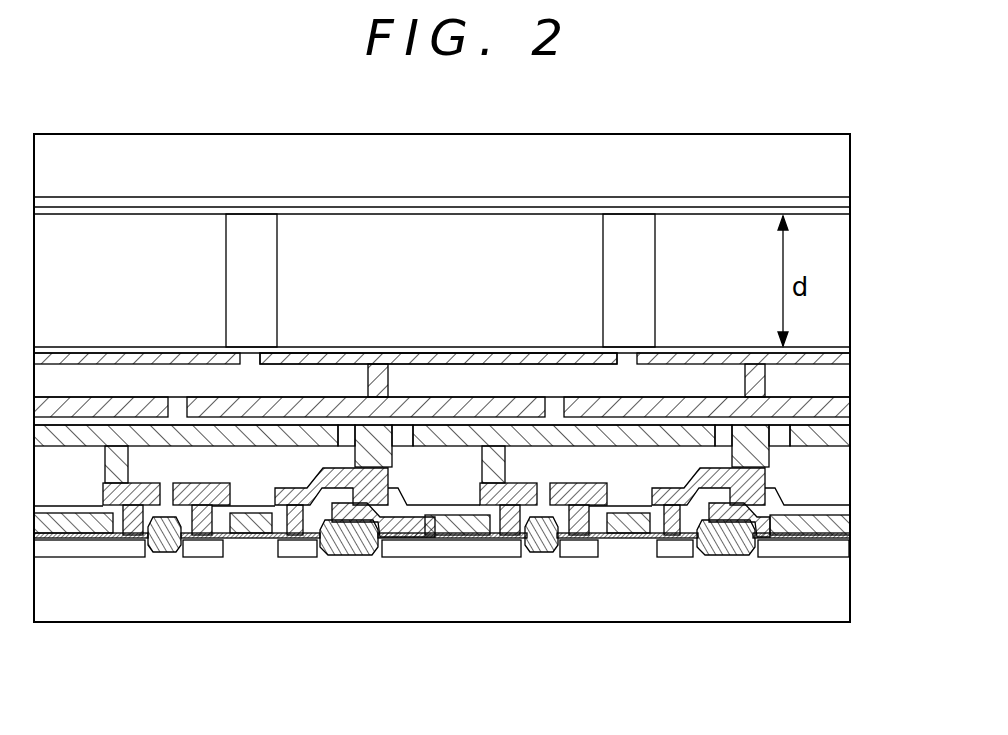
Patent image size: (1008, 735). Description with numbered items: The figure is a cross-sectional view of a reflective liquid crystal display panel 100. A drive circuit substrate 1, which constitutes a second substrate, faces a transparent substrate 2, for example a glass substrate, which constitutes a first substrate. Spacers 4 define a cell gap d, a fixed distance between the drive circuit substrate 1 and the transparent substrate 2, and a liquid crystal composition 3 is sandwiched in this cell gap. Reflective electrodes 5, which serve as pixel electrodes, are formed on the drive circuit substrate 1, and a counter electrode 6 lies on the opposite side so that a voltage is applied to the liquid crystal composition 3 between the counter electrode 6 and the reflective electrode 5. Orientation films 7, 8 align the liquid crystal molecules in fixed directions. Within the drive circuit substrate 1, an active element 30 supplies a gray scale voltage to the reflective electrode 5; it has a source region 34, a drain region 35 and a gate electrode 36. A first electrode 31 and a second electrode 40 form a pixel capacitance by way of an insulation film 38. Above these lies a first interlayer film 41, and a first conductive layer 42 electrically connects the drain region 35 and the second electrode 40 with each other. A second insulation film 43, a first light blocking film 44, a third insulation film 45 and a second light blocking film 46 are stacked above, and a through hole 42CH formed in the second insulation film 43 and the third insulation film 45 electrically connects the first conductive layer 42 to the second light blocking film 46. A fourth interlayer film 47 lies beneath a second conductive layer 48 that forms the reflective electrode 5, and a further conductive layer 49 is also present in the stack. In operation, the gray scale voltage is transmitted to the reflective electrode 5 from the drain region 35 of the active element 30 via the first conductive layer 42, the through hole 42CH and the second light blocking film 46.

The drive circuit substrate 1 is at (763, 612).
The transparent substrate 2 is at (842, 170).
The liquid crystal composition 3 is at (837, 262).
The spacers 4 is at (645, 256).
The reflective electrode 5 is at (536, 362).
The second conductive layer 48 is at (438, 358).
The counter electrode 6 is at (83, 201).
The orientation film 7 is at (124, 349).
The orientation film 8 is at (184, 216).
The active element 30 is at (242, 548).
The first electrode 31 is at (398, 556).
The source region 34 is at (580, 556).
The drain region 35 is at (677, 555).
The gate electrode 36 is at (622, 540).
The insulation film 38 is at (250, 538).
The second electrode 40 is at (430, 540).
The first interlayer film 41 is at (455, 540).
The first conductive layer 42 is at (317, 536).
The through hole 42CH is at (386, 426).
The second insulation film 43 is at (196, 486).
The first light blocking film 44 is at (160, 442).
The third insulation film 45 is at (77, 412).
The second light blocking film 46 is at (334, 403).
The fourth interlayer film 47 is at (292, 372).
The conductive layer 49 is at (515, 540).
The liquid crystal display panel 100 is at (832, 628).